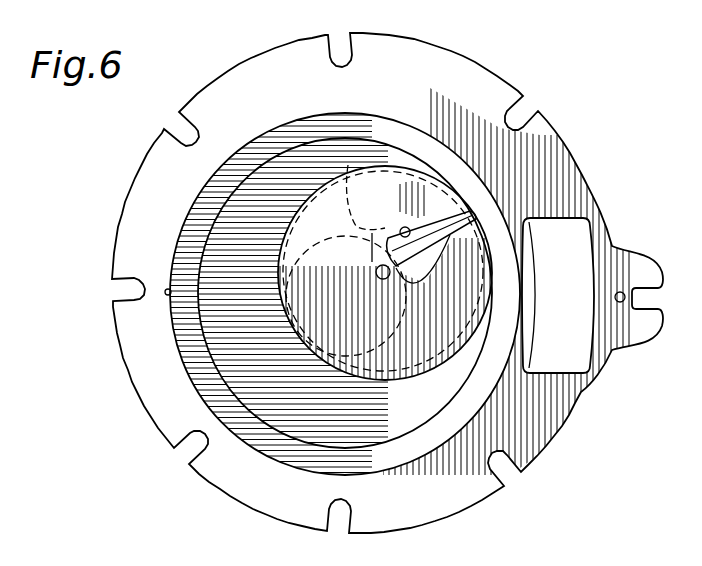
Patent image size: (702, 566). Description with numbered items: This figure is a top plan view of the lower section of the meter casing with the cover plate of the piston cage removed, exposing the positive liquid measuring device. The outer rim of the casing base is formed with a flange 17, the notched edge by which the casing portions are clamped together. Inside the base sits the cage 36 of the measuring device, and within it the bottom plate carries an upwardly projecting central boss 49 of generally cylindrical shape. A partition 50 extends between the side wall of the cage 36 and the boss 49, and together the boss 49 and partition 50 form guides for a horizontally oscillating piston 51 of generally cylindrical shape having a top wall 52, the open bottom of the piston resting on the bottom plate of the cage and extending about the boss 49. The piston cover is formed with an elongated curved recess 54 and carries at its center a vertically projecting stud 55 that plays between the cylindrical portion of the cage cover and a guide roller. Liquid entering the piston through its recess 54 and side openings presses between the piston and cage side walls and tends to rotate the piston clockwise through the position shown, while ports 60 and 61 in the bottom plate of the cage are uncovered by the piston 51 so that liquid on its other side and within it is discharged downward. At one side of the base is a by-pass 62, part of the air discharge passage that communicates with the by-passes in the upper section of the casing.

The flange 17 is at (495, 88).
The cage 36 is at (458, 384).
The central boss 49 is at (283, 288).
The partition 50 is at (450, 233).
The piston 51 is at (298, 334).
The top wall 52 is at (383, 271).
The elongated curved recess 54 is at (422, 280).
The stud 55 is at (378, 268).
The port 60 is at (346, 260).
The port 61 is at (400, 229).
The by-pass 62 is at (577, 252).